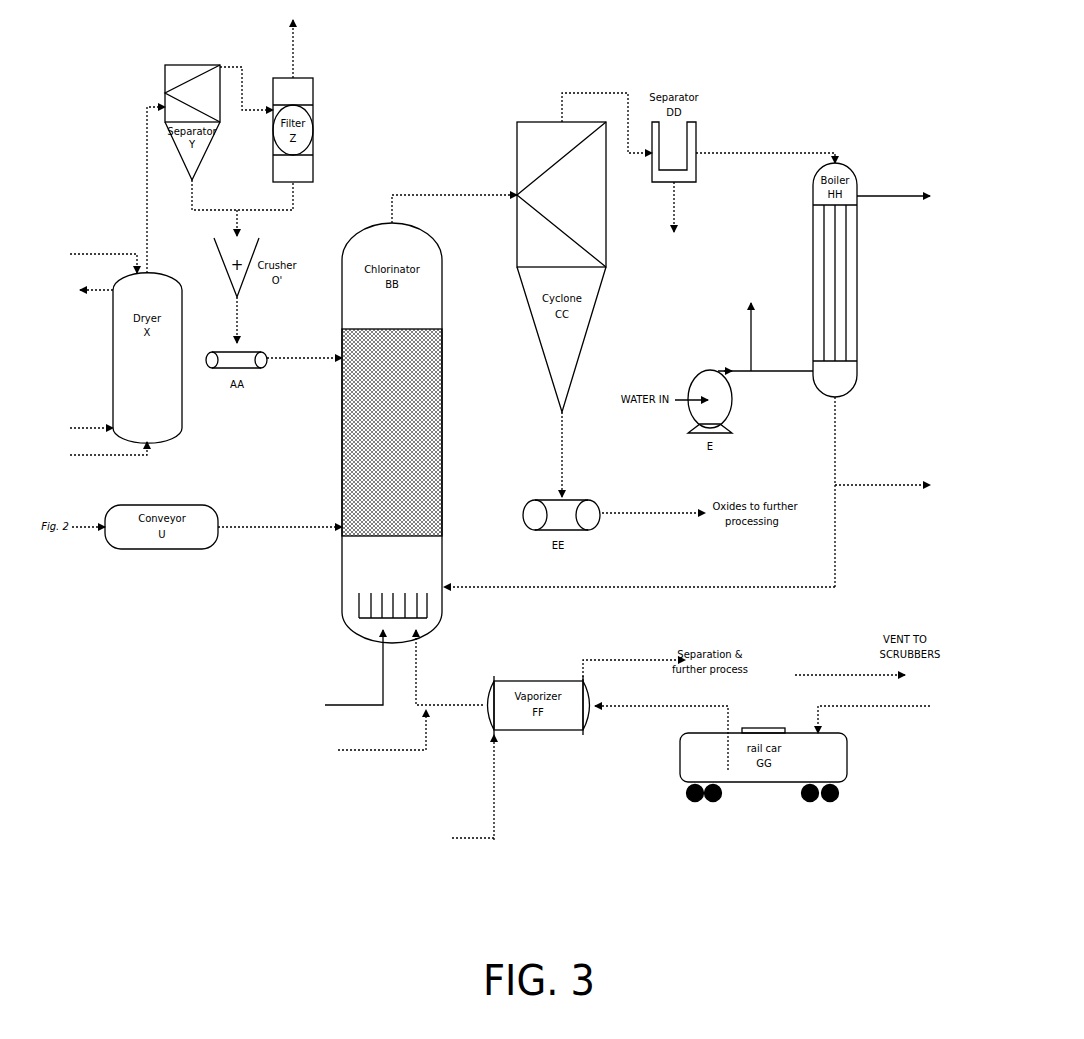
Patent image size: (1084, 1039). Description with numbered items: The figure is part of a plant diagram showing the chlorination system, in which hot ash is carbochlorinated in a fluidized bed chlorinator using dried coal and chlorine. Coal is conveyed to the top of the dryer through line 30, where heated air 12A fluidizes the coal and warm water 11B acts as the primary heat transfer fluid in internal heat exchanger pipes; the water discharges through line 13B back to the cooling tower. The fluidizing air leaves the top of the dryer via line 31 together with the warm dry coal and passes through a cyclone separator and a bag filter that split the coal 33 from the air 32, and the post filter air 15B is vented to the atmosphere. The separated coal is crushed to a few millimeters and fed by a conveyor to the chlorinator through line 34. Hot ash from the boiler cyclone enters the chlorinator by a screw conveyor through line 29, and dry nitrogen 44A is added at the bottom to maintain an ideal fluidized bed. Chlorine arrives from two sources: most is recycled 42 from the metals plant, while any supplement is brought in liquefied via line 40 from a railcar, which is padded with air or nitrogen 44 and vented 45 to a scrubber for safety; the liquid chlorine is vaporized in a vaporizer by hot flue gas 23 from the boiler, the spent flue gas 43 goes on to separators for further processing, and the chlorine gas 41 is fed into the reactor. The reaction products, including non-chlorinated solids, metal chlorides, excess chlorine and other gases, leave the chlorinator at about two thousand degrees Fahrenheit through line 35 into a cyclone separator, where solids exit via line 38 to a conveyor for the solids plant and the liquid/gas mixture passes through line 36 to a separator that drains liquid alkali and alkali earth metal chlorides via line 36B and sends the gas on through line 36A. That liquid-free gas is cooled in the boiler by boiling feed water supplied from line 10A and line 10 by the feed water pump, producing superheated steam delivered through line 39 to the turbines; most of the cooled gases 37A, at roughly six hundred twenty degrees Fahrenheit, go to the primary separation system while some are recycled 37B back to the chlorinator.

The post filter air 15B is at (300, 42).
The air 32 is at (246, 81).
The fluidizing air exit line 31 is at (143, 190).
The separated coal 33 is at (242, 208).
The coal feed line 30 is at (92, 256).
The water discharge line 13B is at (75, 286).
The warm water 11B is at (82, 428).
The heated air 12A is at (108, 456).
The crushed coal feed line 34 is at (304, 366).
The reactor exit line 35 is at (454, 202).
The liquid/gas mixture exit line 36 is at (607, 113).
The gas line 36A is at (765, 146).
The liquid metal chlorides line 36B is at (673, 232).
The superheated steam line 39 is at (910, 195).
The water line 10 is at (749, 324).
The boiler feed water line 10A is at (765, 363).
The cooled gases 37A is at (899, 492).
The recycled gas stream 37B is at (639, 598).
The solids line 38 is at (571, 454).
The ash conveying line 29 is at (280, 520).
The nitrogen line 44A is at (330, 671).
The chlorine gas line 41 is at (449, 667).
The recycled chlorine line 42 is at (304, 733).
The hot flue gas 23 is at (475, 794).
The flue gas 43 is at (634, 664).
The supplemental chlorine line 40 is at (661, 730).
The padding gas line 44 is at (874, 719).
The railcar vent line 45 is at (850, 665).